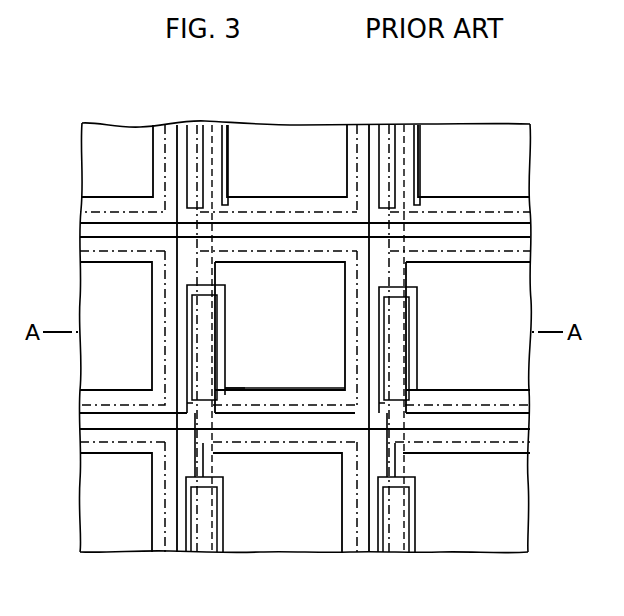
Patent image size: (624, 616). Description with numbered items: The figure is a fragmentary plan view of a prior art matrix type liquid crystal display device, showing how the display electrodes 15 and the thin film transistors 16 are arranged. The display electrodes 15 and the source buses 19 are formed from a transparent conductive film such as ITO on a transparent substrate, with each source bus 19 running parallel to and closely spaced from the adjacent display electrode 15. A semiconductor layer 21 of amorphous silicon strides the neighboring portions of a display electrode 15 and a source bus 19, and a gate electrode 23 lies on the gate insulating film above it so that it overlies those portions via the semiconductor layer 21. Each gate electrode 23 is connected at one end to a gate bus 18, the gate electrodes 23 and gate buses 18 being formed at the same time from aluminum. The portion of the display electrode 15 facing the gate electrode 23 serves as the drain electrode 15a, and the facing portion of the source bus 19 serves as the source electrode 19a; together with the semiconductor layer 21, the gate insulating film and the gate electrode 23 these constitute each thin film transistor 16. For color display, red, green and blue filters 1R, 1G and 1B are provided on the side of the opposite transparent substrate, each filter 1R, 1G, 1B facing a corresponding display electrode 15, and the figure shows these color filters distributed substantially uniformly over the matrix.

The red filter 1R is at (275, 250).
The green filter 1G is at (166, 140).
The blue filter 1B is at (358, 135).
The display electrode 15 is at (310, 145).
The drain electrode 15a is at (215, 375).
The thin film transistor 16 is at (208, 343).
The gate bus 18 is at (525, 232).
The source bus 19 is at (183, 260).
The source electrode 19a is at (192, 326).
The semiconductor layer 21 is at (223, 292).
The gate electrode 23 is at (208, 313).